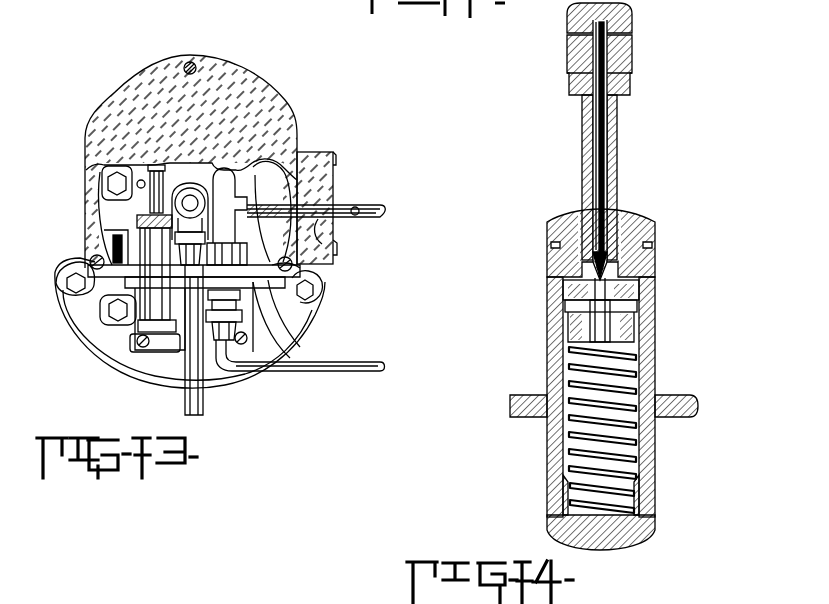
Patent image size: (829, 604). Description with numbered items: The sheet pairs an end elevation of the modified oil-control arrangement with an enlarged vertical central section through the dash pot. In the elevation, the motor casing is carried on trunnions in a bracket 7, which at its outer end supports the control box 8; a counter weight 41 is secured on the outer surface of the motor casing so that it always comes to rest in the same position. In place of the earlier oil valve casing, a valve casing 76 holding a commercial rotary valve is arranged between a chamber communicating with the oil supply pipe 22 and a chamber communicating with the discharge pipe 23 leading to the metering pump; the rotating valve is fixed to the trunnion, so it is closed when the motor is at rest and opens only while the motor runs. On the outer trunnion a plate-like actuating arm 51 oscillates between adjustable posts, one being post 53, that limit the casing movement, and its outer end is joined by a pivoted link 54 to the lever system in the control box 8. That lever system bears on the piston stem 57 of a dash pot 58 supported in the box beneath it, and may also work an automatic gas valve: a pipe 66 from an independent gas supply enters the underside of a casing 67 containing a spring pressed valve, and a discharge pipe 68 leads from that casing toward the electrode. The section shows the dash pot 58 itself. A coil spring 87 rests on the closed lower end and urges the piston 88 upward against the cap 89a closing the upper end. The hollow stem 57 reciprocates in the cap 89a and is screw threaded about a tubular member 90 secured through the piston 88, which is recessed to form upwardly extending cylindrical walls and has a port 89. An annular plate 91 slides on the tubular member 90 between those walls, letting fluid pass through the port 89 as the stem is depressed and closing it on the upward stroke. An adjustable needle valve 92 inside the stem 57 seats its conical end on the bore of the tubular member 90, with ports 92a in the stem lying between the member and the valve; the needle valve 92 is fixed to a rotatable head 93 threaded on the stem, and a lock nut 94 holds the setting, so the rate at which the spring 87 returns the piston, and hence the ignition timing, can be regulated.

In FIG. 13, the control box 8 is at (252, 72).
In FIG. 13, the pivoted link 54 is at (122, 170).
In FIG. 13, the actuating arm 51 is at (152, 218).
In FIG. 13, the piston stem 57 is at (178, 240).
In FIG. 14, the piston stem 57 is at (617, 137).
In FIG. 13, the dash pot 58 is at (148, 238).
In FIG. 14, the dash pot 58 is at (655, 333).
In FIG. 13, the post 53 is at (120, 252).
In FIG. 13, the valve casing 76 is at (212, 198).
In FIG. 13, the counter weight 41 is at (318, 185).
In FIG. 13, the discharge pipe 23 is at (368, 207).
In FIG. 13, the discharge pipe 68 is at (320, 242).
In FIG. 13, the casing 67 is at (262, 258).
In FIG. 13, the bracket 7 is at (315, 305).
In FIG. 13, the oil supply pipe 22 is at (204, 402).
In FIG. 13, the pipe 66 is at (318, 366).
In FIG. 14, the rotatable head 93 is at (632, 22).
In FIG. 14, the lock nut 94 is at (632, 80).
In FIG. 14, the adjustable needle valve 92 is at (606, 176).
In FIG. 14, the cap 89a is at (655, 225).
In FIG. 14, the ports 92a is at (580, 268).
In FIG. 14, the port 89 is at (572, 338).
In FIG. 14, the tubular member 90 is at (565, 293).
In FIG. 14, the piston 88 is at (565, 319).
In FIG. 14, the annular plate 91 is at (625, 300).
In FIG. 14, the coil spring 87 is at (655, 395).